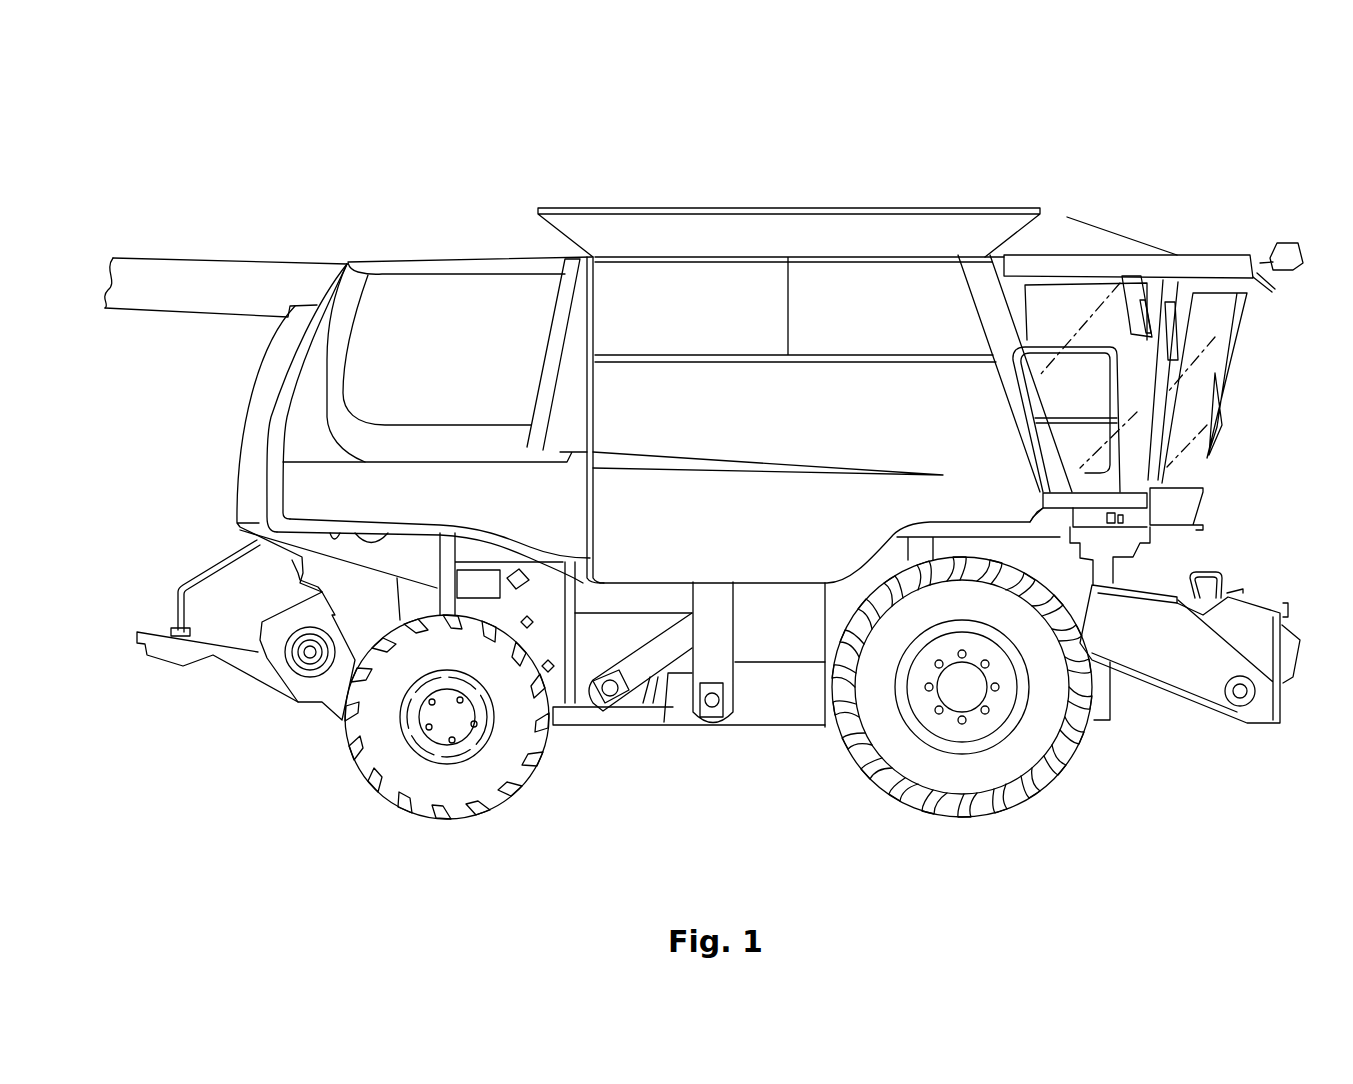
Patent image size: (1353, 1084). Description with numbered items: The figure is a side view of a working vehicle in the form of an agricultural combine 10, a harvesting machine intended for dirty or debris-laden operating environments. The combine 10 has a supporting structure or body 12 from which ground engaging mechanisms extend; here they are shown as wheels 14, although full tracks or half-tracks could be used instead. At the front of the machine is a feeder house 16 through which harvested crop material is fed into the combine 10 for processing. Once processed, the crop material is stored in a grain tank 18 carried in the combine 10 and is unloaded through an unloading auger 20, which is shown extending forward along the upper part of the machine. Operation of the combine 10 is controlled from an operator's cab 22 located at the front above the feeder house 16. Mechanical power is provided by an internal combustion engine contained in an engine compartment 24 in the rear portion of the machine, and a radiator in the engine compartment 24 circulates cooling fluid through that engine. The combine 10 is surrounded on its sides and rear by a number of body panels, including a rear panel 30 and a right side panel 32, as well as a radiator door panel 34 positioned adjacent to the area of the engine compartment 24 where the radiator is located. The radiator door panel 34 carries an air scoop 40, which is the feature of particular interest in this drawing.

The agricultural combine 10 is at (677, 160).
The body 12 is at (762, 688).
The wheels 14 is at (523, 752).
The feeder house 16 is at (1157, 655).
The grain tank 18 is at (893, 228).
The unloading auger 20 is at (205, 278).
The operator's cab 22 is at (1102, 399).
The engine compartment 24 is at (537, 230).
The rear panel 30 is at (250, 413).
The right side panel 32 is at (830, 430).
The radiator door panel 34 is at (312, 290).
The air scoop 40 is at (430, 310).